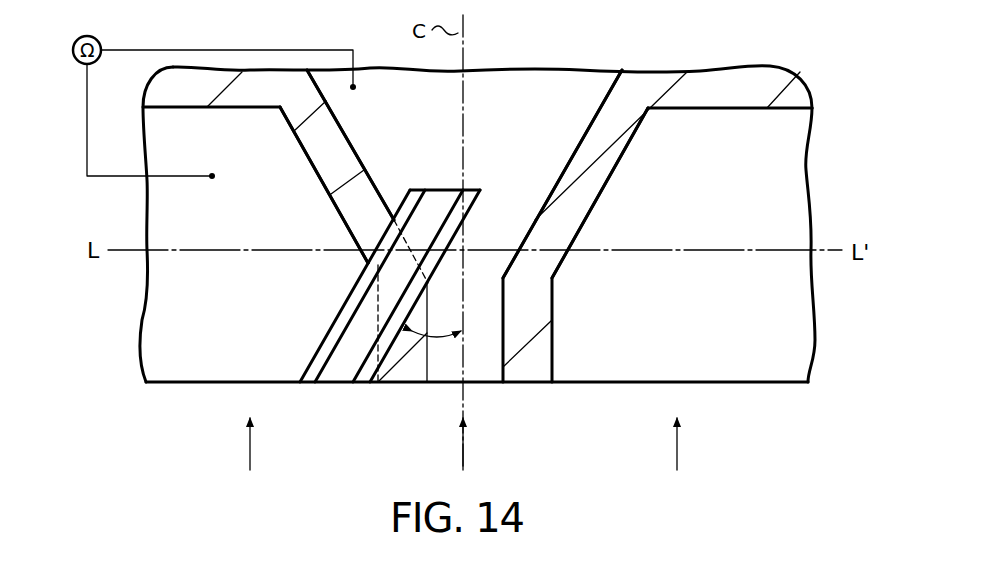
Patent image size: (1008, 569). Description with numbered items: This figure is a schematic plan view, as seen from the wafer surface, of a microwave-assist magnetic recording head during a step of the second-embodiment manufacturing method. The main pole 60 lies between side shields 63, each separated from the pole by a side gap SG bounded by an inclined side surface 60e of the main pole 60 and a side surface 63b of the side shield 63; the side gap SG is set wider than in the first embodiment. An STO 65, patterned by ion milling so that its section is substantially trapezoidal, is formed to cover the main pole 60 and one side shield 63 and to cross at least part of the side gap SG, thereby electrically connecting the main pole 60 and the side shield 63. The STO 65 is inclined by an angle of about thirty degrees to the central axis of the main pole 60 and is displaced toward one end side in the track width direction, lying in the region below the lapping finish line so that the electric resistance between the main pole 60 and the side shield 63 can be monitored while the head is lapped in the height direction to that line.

The main pole 60 is at (545, 93).
The inclined side surface of the main pole 60e is at (338, 128).
The side shield 63 is at (161, 213).
The side surface of the side shield 63b is at (337, 191).
The STO 65 is at (342, 366).
The side gap SG is at (402, 366).